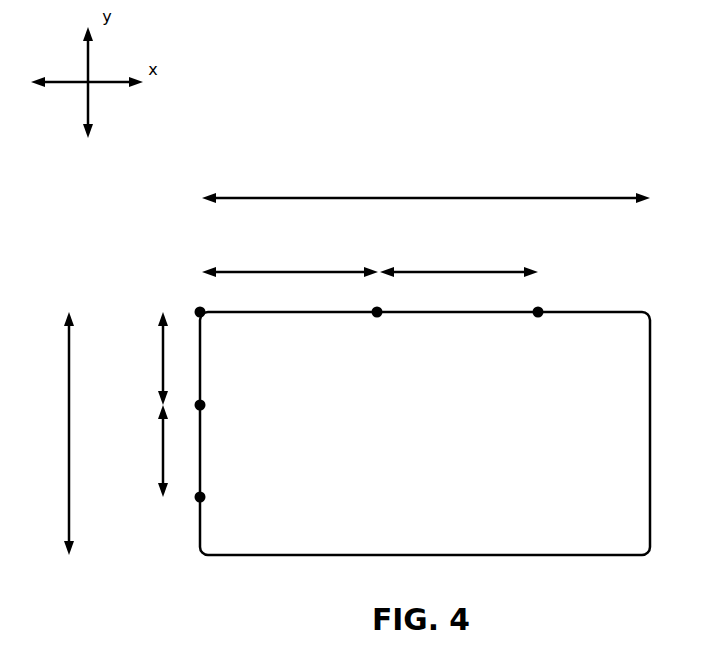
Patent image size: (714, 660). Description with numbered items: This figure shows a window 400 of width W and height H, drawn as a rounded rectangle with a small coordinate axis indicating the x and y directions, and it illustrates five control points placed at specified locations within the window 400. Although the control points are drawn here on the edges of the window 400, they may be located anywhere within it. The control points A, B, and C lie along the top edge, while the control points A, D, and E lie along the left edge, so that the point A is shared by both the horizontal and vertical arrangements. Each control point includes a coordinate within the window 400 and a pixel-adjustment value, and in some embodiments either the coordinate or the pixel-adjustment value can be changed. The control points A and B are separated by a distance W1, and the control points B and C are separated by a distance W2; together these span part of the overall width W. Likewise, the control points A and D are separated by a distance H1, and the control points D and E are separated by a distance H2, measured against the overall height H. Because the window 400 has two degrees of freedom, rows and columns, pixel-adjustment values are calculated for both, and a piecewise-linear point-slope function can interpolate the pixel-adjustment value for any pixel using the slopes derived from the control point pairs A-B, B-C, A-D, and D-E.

The window 400 is at (425, 433).
The width W is at (426, 187).
The distance between control points A and B W1 is at (290, 261).
The distance between control points B and C W2 is at (459, 261).
The height H is at (54, 433).
The distance between control points A and D H1 is at (146, 358).
The distance between control points D and E H2 is at (146, 451).
The control point A is at (200, 300).
The control point B is at (377, 300).
The control point C is at (537, 300).
The control point D is at (191, 406).
The control point E is at (191, 497).